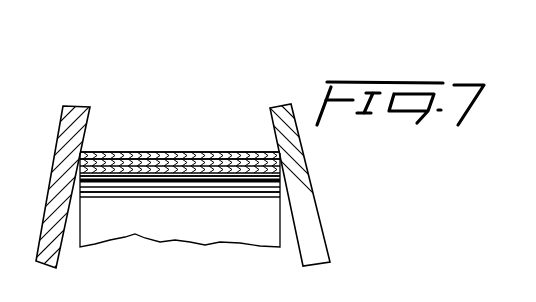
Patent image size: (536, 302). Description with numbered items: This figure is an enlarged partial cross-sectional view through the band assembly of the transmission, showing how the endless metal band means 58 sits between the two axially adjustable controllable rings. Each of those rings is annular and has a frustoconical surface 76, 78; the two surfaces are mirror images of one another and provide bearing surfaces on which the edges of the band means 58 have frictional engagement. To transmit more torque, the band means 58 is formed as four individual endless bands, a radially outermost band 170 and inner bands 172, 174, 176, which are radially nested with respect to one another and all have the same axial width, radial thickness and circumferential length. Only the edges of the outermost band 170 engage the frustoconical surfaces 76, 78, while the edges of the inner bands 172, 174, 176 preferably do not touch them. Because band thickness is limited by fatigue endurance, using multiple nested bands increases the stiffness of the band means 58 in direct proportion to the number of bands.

The endless metal band means 58 is at (156, 142).
The frustoconical surface 76 is at (89, 125).
The frustoconical surface 78 is at (272, 116).
The radially outermost band 170 is at (205, 158).
The inner band 172 is at (107, 170).
The inner band 174 is at (150, 172).
The inner band 176 is at (220, 180).